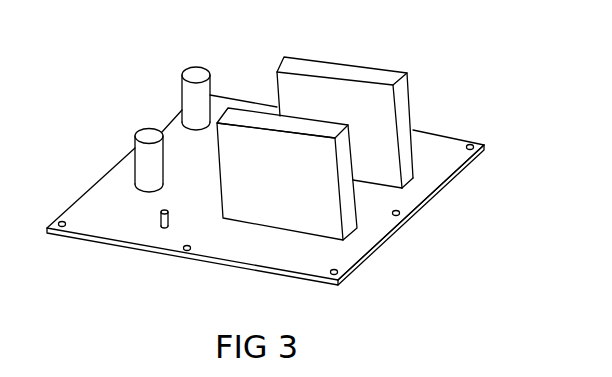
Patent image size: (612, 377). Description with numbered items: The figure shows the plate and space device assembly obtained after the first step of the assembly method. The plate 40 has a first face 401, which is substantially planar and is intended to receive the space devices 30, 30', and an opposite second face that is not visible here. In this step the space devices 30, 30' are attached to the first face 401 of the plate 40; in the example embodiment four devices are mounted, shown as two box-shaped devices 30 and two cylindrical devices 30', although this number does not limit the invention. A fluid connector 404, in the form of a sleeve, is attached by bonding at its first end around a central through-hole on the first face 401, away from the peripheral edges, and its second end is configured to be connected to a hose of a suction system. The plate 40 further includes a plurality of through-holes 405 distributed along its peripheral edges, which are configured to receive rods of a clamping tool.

The space device 30 is at (315, 126).
The space device 30' is at (142, 129).
The plate 40 is at (150, 252).
The first face 401 is at (328, 252).
The fluid connector 404 is at (172, 218).
The through-holes 405 is at (58, 220).